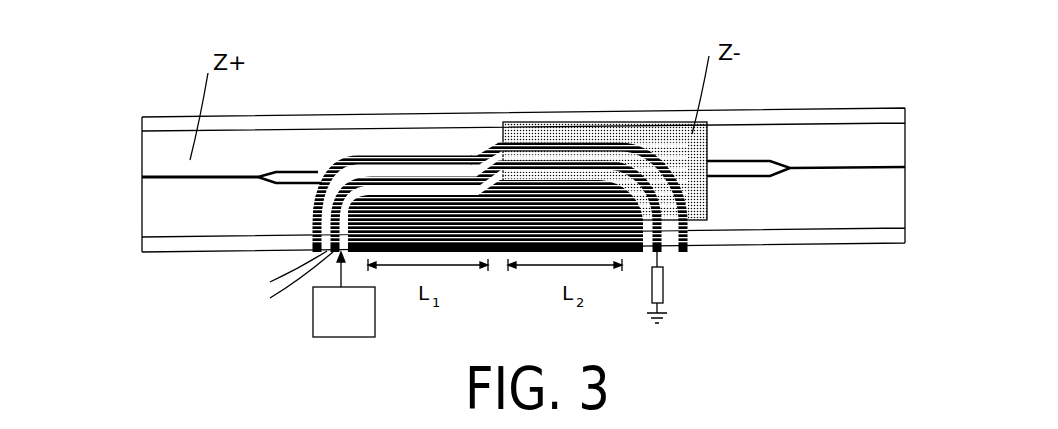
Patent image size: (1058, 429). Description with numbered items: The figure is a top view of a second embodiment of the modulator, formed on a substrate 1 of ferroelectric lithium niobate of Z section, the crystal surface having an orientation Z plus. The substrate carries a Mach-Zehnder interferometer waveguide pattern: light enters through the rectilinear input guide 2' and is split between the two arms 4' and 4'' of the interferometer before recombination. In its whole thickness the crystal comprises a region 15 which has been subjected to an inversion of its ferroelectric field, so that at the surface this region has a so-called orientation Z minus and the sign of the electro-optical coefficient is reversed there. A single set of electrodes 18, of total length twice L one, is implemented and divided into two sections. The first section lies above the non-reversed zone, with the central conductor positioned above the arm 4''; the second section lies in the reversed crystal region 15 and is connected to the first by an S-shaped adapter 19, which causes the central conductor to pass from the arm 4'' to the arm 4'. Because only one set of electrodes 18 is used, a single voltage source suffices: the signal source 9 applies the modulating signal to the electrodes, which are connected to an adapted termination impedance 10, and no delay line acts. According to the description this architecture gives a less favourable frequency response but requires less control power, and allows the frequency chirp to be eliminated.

The substrate 1 is at (870, 235).
The input guide 2' is at (496, 132).
The arm of the interferometer 4' is at (290, 117).
The arm of the interferometer 4'' is at (288, 117).
The signal source 9 is at (373, 325).
The termination impedance 10 is at (650, 283).
The region of ferroelectric field inversion 15 is at (627, 141).
The set of electrodes 18 is at (288, 279).
The S-shaped adapter 19 is at (488, 157).